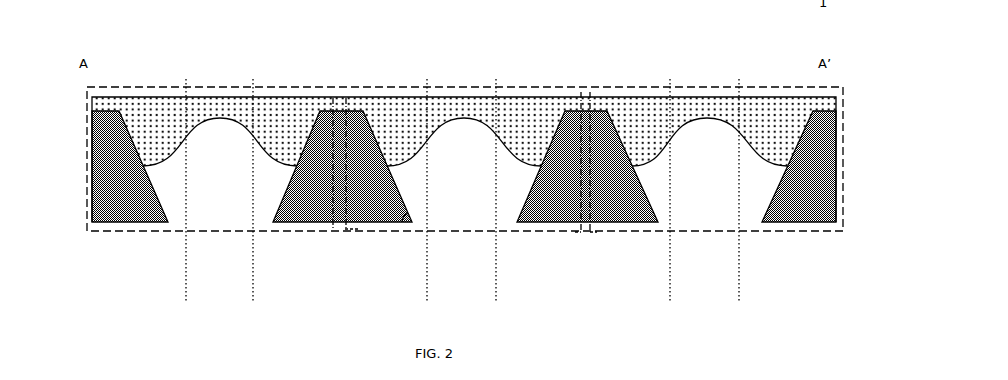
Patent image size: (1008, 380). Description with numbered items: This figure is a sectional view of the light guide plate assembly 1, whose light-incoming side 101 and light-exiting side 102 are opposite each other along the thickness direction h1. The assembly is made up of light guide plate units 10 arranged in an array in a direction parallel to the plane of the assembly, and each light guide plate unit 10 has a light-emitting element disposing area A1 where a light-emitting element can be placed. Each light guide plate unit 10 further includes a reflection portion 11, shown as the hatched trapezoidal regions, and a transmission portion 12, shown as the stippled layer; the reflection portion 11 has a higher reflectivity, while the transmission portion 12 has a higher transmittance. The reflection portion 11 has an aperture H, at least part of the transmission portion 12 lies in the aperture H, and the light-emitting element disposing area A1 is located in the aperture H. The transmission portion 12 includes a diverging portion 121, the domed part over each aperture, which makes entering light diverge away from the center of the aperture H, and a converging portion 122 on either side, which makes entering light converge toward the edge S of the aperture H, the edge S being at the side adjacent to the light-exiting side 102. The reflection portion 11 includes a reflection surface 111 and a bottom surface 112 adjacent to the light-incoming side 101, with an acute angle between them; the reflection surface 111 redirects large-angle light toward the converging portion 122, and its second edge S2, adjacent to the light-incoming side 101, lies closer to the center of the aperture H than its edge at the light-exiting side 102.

The light guide plate assembly 1 is at (465, 159).
The light guide plate unit 10 is at (215, 233).
The reflection portion 11 is at (382, 202).
The transmission portion 12 is at (505, 53).
The light-incoming side 101 is at (141, 240).
The light-exiting side 102 is at (140, 72).
The reflection surface 111 is at (371, 130).
The bottom surface 112 is at (357, 224).
The diverging portion 121 is at (457, 117).
The converging portion 122 is at (398, 147).
The edge of the aperture S is at (366, 116).
The second edge S2 is at (410, 220).
The aperture H is at (243, 203).
The light-emitting element disposing area A1 is at (739, 285).
The thickness direction h1 is at (73, 262).